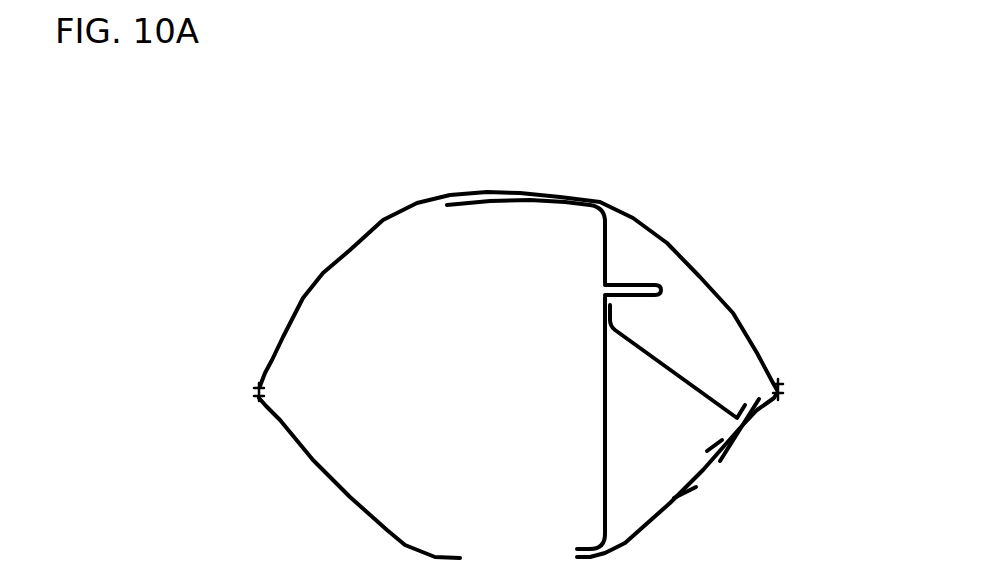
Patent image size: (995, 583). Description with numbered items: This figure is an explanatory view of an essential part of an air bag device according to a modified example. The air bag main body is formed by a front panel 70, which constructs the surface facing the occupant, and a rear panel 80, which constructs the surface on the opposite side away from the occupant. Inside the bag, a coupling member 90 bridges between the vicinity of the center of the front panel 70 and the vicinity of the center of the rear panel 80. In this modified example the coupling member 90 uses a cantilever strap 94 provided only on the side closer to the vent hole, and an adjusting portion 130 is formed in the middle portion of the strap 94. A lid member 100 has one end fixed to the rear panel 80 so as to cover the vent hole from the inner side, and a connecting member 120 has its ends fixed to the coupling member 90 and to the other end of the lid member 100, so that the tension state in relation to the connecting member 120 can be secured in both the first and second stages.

The front panel 70 is at (300, 299).
The rear panel 80 is at (310, 462).
The coupling member 90 is at (618, 363).
The band-like strap 94 is at (603, 237).
The lid member 100 is at (707, 443).
The connecting member 120 is at (700, 384).
The adjusting portion 130 is at (625, 287).